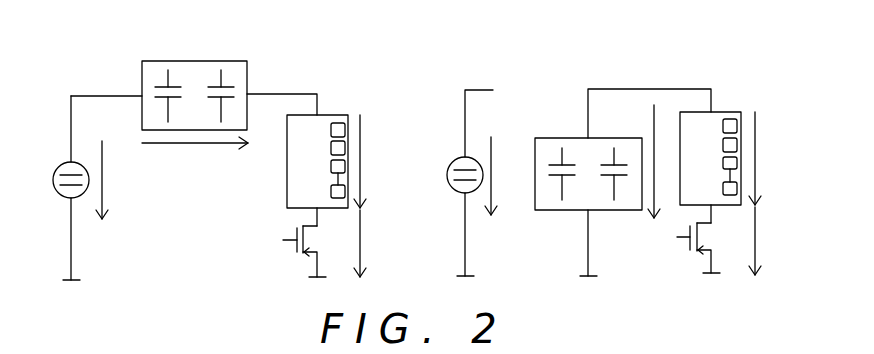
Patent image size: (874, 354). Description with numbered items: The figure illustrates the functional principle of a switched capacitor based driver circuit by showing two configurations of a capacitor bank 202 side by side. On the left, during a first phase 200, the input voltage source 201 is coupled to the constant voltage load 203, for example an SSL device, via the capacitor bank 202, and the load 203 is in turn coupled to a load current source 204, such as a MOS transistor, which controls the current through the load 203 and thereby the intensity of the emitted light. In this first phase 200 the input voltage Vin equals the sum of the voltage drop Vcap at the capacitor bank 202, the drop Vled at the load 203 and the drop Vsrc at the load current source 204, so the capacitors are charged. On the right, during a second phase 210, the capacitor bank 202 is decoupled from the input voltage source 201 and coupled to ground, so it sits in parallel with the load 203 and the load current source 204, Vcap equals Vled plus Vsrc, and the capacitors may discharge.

The first phase 200 is at (185, 247).
The input voltage source 201 is at (57, 168).
The capacitor bank 202 is at (197, 60).
The constant voltage load 203 is at (287, 208).
The load current source 204 is at (283, 240).
The second phase 210 is at (593, 66).